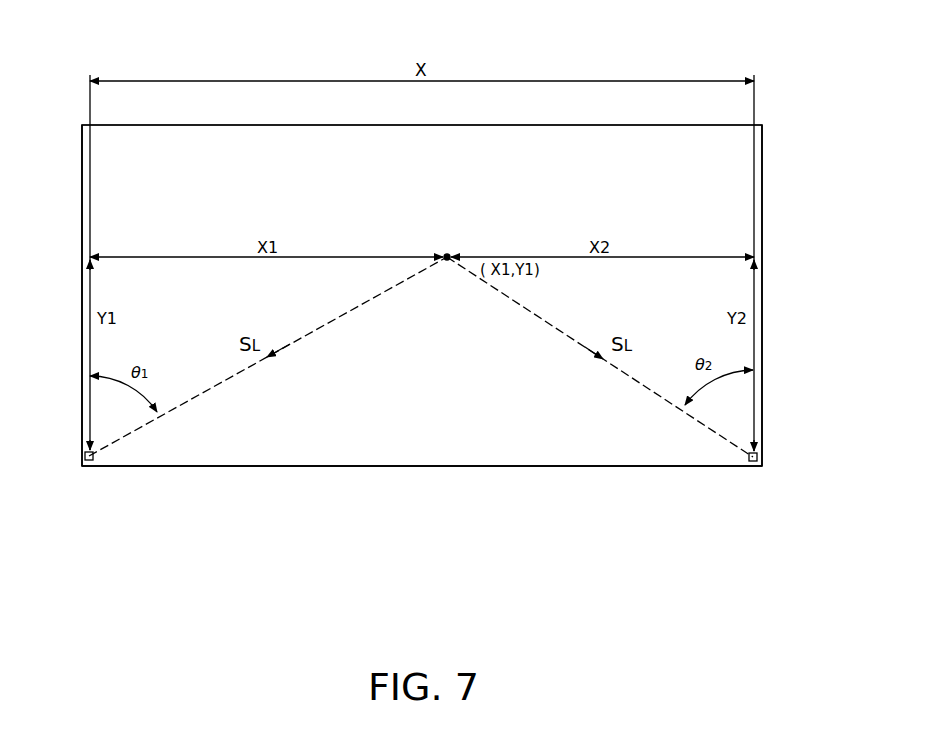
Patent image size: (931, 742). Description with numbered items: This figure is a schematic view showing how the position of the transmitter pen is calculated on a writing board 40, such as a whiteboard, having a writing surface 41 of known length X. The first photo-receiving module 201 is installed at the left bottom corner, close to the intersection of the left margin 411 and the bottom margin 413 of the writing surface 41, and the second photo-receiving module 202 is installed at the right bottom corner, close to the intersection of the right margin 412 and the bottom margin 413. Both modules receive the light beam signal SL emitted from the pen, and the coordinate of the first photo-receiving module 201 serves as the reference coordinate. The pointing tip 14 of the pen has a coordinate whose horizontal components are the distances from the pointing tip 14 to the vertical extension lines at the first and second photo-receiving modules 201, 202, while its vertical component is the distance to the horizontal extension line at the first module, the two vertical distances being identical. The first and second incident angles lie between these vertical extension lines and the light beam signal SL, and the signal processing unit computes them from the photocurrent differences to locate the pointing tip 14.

The writing board 40 is at (760, 116).
The writing surface 41 is at (744, 185).
The left margin 411 is at (81, 397).
The right margin 412 is at (763, 396).
The bottom margin 413 is at (326, 468).
The first photo-receiving module 201 is at (87, 468).
The second photo-receiving module 202 is at (757, 468).
The pointing tip 14 is at (447, 263).